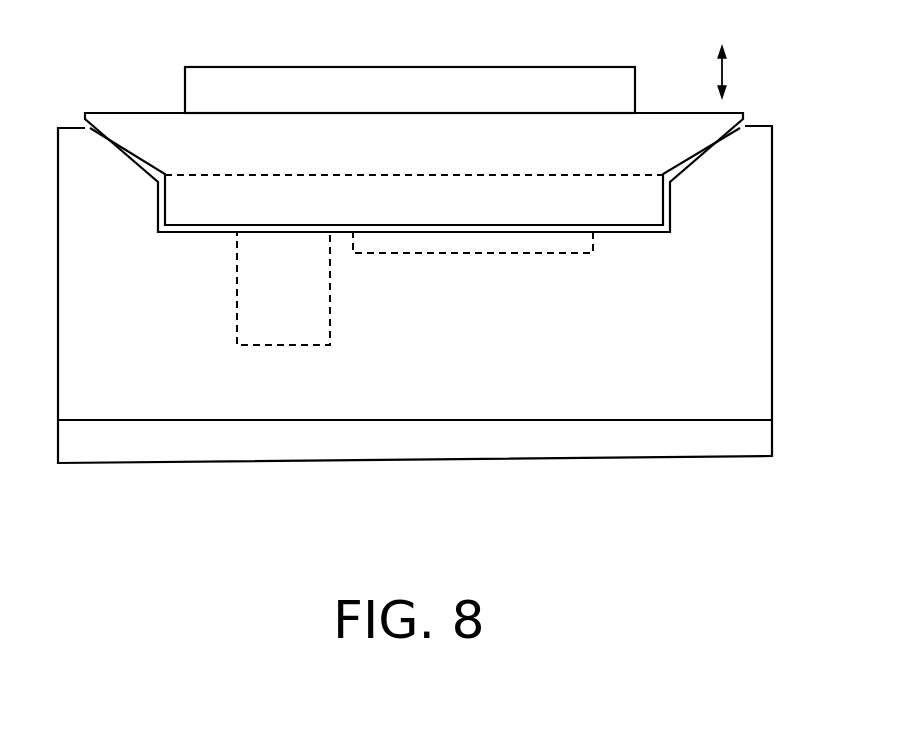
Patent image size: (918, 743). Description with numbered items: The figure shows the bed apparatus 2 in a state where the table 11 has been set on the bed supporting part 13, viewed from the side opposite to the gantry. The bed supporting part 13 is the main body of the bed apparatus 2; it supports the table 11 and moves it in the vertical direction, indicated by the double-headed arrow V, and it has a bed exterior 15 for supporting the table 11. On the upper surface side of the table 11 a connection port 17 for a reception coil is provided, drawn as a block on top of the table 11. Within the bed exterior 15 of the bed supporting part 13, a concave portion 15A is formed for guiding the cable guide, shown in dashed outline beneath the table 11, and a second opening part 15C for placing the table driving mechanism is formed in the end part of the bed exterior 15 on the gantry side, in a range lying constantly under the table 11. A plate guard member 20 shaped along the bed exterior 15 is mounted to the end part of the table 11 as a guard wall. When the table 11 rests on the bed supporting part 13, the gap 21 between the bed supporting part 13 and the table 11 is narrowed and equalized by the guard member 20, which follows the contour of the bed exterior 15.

The bed apparatus 2 is at (414, 119).
The table 11 is at (153, 112).
The bed supporting part 13 is at (772, 435).
The bed exterior 15 is at (773, 152).
The concave portion 15A is at (275, 352).
The second opening part 15C is at (505, 253).
The connection port 17 is at (185, 95).
The guard member 20 is at (317, 200).
The gap 21 is at (602, 230).
The vertical direction V is at (725, 77).